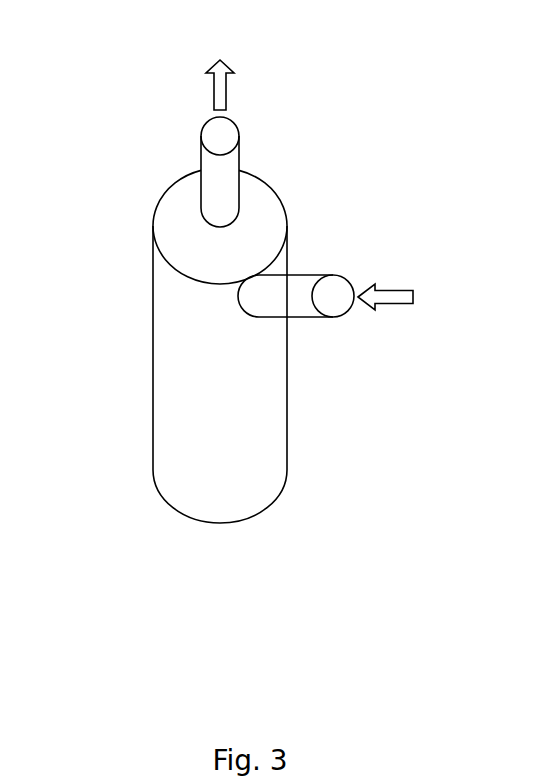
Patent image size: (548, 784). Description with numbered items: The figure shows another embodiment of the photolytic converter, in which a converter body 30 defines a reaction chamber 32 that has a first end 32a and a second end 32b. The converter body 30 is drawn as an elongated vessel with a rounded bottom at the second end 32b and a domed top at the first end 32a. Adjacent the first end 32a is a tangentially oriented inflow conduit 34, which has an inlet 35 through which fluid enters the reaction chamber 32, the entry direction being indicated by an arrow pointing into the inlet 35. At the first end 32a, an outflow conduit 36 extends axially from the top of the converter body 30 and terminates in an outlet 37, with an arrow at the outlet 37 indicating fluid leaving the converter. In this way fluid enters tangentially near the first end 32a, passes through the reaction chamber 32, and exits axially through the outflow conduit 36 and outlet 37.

The converter body 30 is at (126, 230).
The reaction chamber 32 is at (288, 422).
The first end 32a is at (260, 227).
The second end 32b is at (235, 522).
The tangentially oriented inflow conduit 34 is at (385, 312).
The inlet 35 is at (337, 295).
The outlet pipe 36 is at (240, 155).
The outlet 37 is at (223, 135).